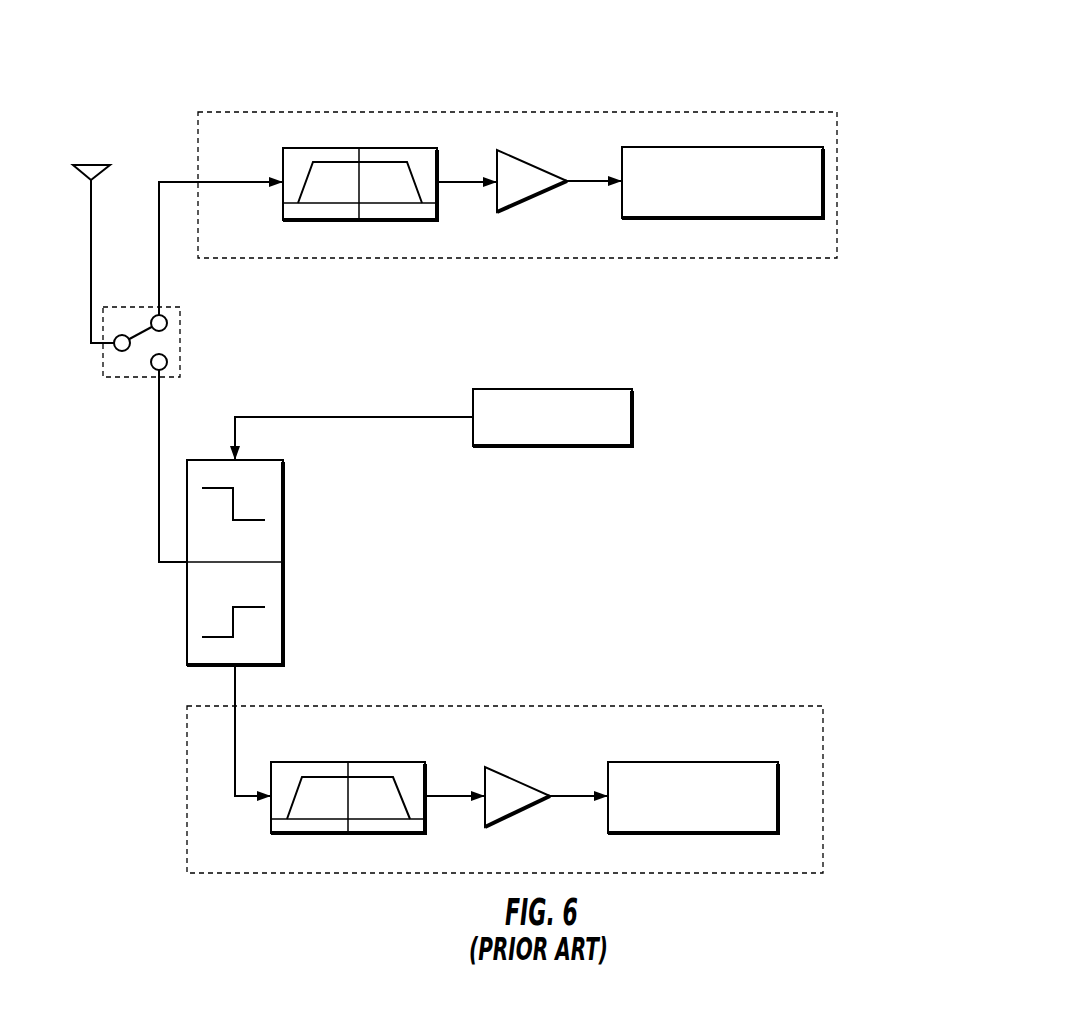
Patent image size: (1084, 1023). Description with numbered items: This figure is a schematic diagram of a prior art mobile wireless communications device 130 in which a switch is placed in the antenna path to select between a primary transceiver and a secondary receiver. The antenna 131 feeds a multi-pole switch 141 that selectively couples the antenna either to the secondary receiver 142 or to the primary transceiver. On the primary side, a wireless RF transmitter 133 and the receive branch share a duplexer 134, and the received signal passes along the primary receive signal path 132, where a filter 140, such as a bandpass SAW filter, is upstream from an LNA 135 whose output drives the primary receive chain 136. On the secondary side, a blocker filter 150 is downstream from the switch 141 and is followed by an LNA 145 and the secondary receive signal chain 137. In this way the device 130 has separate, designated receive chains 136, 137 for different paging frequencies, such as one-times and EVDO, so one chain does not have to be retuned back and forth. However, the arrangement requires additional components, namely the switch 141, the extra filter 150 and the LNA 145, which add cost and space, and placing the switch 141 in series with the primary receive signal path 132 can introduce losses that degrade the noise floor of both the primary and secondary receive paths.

The mobile wireless communications device 130 is at (790, 55).
The antenna 131 is at (95, 170).
The primary receive signal path 132 is at (652, 705).
The wireless RF transmitter 133 is at (632, 415).
The duplexer 134 is at (283, 525).
The LNA 135 is at (510, 775).
The primary receive chain 136 is at (730, 762).
The secondary receive signal chain 137 is at (665, 147).
The filter 140 is at (362, 762).
The multi-pole switch 141 is at (181, 345).
The secondary receiver 142 is at (696, 258).
The LNA 145 is at (521, 160).
The blocker filter 150 is at (375, 148).